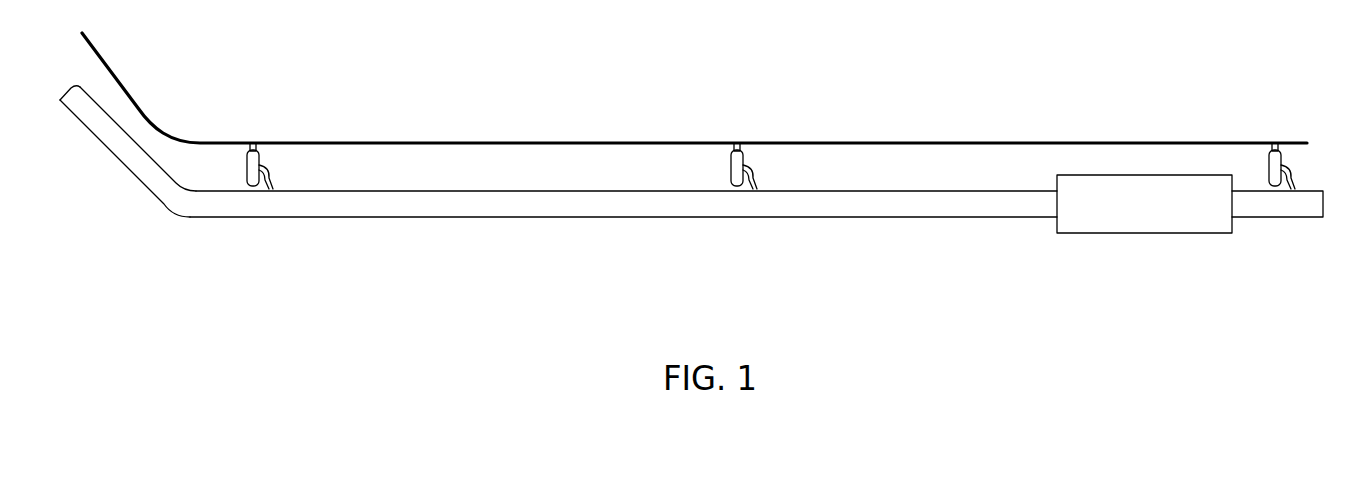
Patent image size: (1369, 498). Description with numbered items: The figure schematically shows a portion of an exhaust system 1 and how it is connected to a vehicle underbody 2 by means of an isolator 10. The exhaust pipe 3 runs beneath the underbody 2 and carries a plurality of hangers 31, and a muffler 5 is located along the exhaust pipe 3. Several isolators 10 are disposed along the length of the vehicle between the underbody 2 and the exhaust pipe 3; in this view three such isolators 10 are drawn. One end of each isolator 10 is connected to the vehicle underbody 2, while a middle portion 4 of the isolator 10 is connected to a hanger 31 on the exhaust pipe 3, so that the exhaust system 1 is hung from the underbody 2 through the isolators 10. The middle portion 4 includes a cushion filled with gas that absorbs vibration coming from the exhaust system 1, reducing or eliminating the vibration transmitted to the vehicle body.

The exhaust system 1 is at (135, 182).
The vehicle underbody 2 is at (490, 142).
The exhaust pipe 3 is at (580, 205).
The middle portion 4 is at (251, 152).
The muffler 5 is at (1145, 233).
The isolator 10 is at (247, 167).
The hanger 31 is at (274, 186).